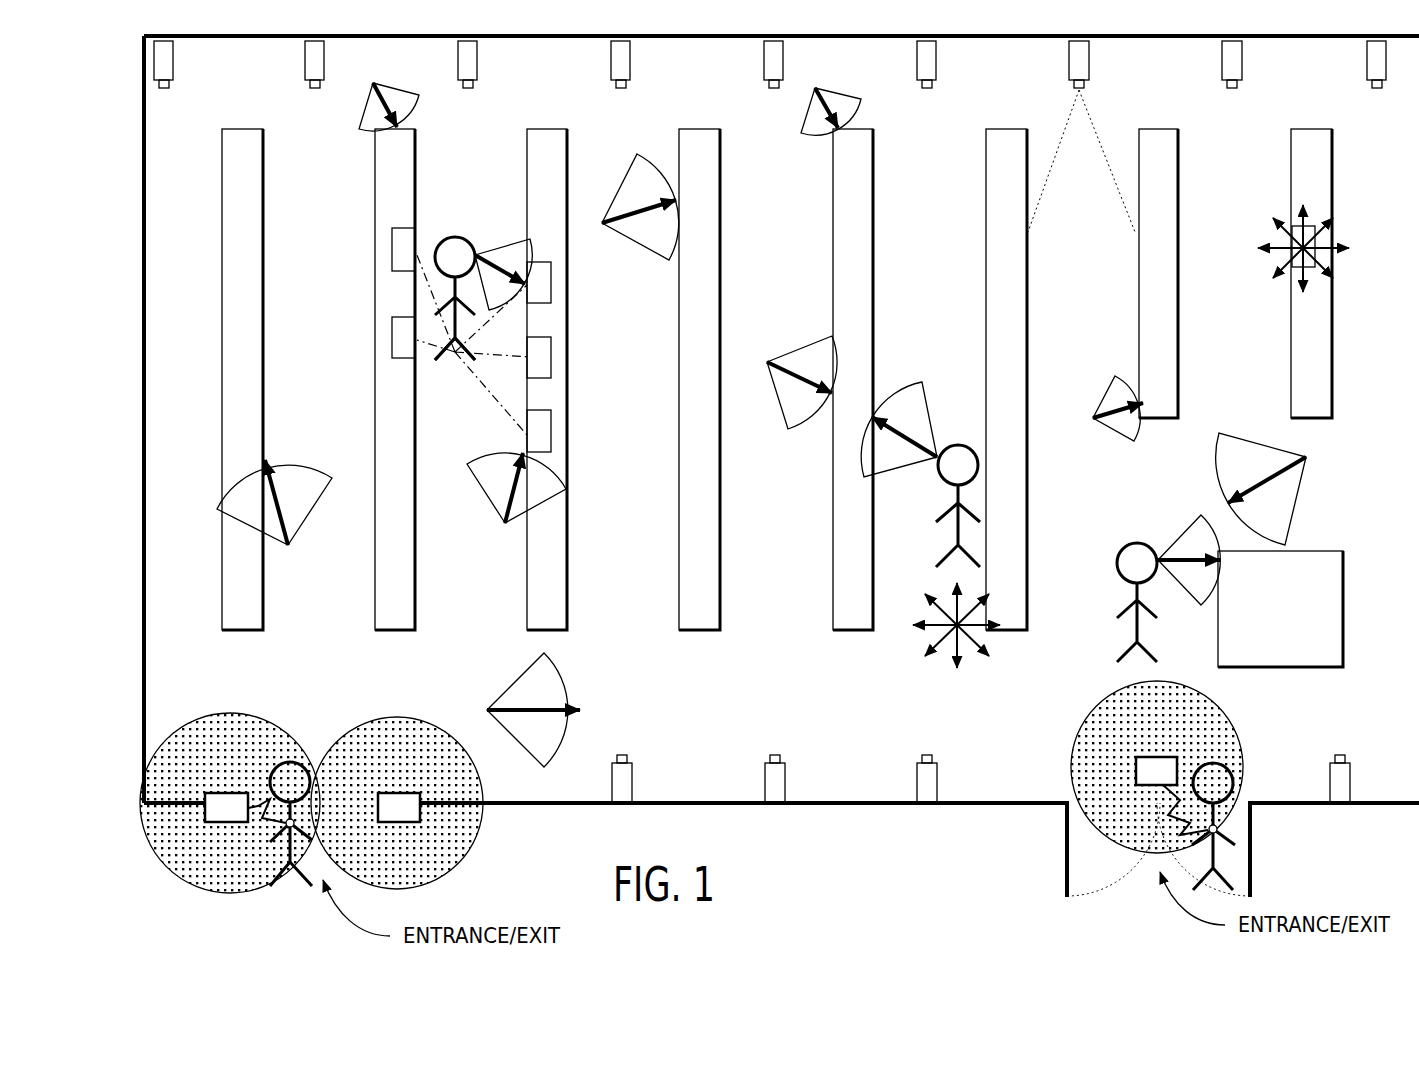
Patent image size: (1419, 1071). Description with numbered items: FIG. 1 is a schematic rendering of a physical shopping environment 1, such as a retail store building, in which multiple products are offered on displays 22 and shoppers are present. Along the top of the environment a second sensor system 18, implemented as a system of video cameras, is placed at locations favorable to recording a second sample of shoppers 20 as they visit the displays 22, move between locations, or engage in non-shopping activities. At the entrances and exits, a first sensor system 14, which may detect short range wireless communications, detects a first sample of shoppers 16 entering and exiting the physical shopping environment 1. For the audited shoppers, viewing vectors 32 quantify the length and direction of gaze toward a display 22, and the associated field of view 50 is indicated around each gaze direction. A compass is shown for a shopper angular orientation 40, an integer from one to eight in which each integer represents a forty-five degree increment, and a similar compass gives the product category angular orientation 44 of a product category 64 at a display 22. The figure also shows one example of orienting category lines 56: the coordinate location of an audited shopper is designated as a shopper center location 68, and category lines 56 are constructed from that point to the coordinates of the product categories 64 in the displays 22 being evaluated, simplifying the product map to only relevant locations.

The physical shopping environment 1 is at (118, 143).
The first sensor system 14 is at (230, 793).
The first sample of shoppers 16 is at (287, 765).
The second sensor system 18 is at (175, 54).
The second sample of shoppers 20 is at (452, 250).
The displays 22 is at (229, 178).
The viewing vector 32 is at (285, 517).
The shopper angular orientation 40 is at (940, 683).
The product category angular orientation 44 is at (1283, 297).
The field of view 50 is at (325, 492).
The category lines 56 is at (490, 395).
The product category 64 is at (392, 255).
The shopper center location 68 is at (452, 355).